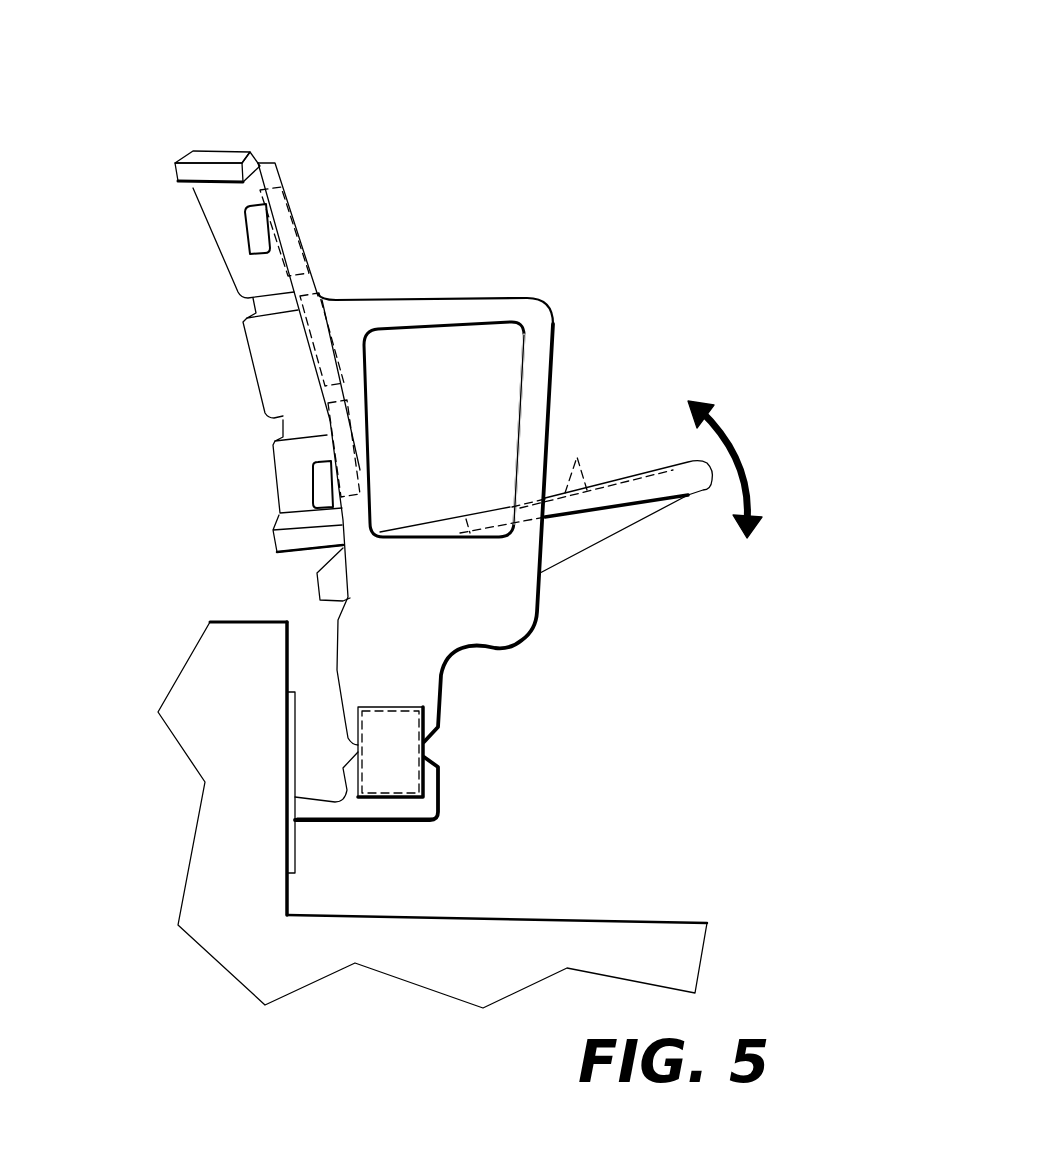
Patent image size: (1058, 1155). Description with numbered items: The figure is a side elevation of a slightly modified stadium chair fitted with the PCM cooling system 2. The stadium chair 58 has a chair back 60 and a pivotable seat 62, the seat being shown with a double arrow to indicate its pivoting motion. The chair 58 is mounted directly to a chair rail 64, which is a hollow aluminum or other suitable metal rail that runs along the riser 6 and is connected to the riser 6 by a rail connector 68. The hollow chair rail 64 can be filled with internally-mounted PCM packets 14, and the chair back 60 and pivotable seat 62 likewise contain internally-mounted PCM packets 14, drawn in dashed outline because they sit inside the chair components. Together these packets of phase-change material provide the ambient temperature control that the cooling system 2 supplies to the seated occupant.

The PCM cooling system 2 is at (688, 118).
The riser 6 is at (228, 621).
The internally-mounted PCM packets 14 is at (320, 390).
The stadium chair 58 is at (133, 150).
The chair back 60 is at (292, 206).
The pivotable seat 62 is at (640, 470).
The chair rail 64 is at (422, 708).
The rail connector 68 is at (358, 822).